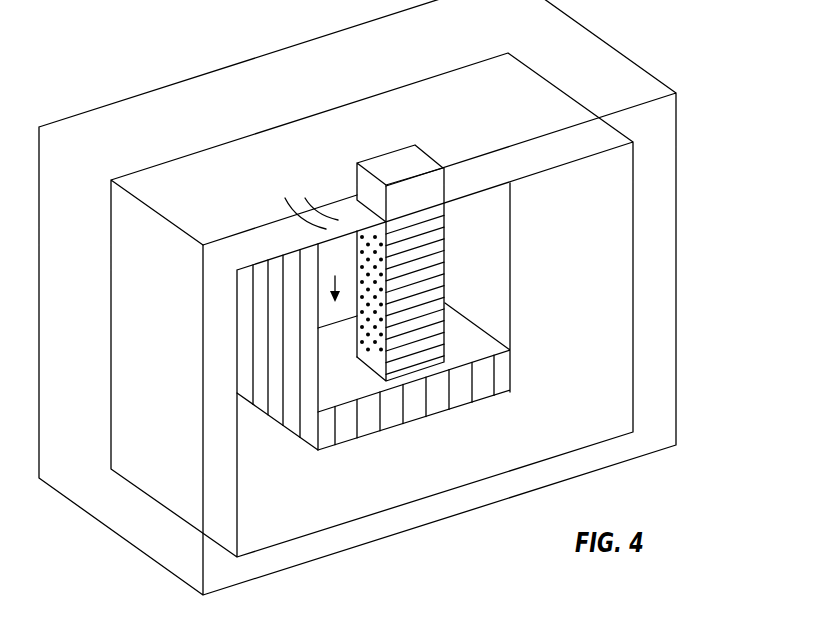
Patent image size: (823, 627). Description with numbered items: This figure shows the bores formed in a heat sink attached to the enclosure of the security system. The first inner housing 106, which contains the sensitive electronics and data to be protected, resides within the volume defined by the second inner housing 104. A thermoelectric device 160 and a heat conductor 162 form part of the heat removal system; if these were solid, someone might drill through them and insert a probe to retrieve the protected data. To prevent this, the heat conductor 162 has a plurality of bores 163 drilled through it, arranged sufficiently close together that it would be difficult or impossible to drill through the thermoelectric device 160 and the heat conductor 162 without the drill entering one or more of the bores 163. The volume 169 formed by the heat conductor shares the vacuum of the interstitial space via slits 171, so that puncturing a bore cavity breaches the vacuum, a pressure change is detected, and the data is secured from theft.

The second inner housing 104 is at (680, 111).
The first inner housing 106 is at (637, 202).
The thermoelectric device 160 is at (445, 182).
The heat conductor 162 is at (510, 303).
The bores 163 is at (384, 376).
The volume 169 is at (312, 218).
The slits 171 is at (338, 274).